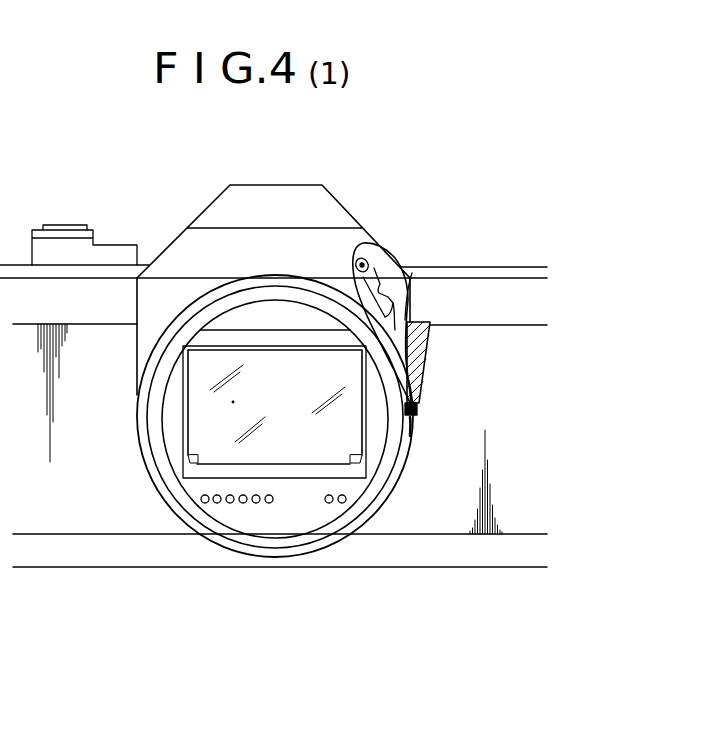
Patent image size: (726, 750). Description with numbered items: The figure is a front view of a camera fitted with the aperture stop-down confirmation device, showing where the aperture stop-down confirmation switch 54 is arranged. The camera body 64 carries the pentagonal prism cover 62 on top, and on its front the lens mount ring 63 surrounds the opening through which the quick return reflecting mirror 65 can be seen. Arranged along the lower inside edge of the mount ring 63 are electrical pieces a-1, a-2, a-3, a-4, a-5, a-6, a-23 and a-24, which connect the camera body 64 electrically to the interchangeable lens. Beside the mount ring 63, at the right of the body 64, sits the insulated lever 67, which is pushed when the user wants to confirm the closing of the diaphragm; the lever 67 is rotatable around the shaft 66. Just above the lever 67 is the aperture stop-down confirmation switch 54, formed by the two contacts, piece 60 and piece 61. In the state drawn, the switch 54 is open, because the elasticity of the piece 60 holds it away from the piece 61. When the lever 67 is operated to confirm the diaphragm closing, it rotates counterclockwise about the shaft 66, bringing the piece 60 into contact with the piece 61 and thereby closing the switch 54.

The aperture stop-down confirmation switch 54 is at (380, 260).
The contact piece 60 is at (398, 272).
The contact piece 61 is at (412, 273).
The pentagonal prism cover 62 is at (318, 212).
The lens mount ring 63 is at (155, 381).
The camera body 64 is at (512, 427).
The quick return reflecting mirror 65 is at (217, 408).
The shaft 66 is at (417, 408).
The insulated lever 67 is at (420, 350).
The electrical piece a-1 is at (205, 503).
The electrical piece a-2 is at (217, 503).
The electrical piece a-3 is at (230, 503).
The electrical piece a-4 is at (243, 503).
The electrical piece a-5 is at (256, 503).
The electrical piece a-6 is at (269, 503).
The electrical piece a-23 is at (329, 503).
The electrical piece a-24 is at (342, 503).